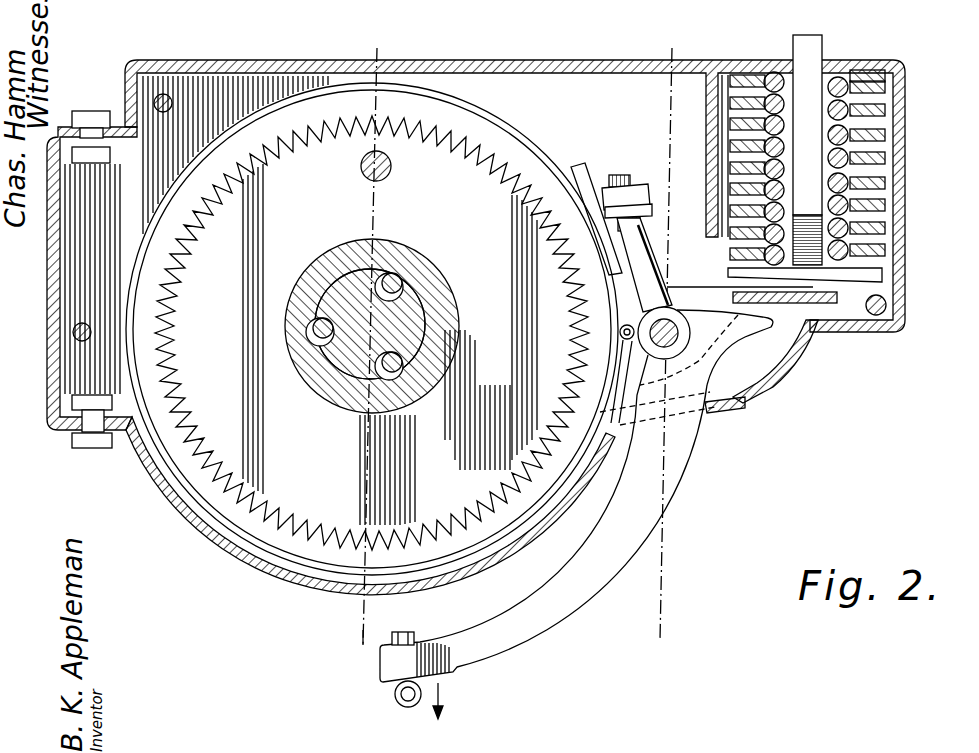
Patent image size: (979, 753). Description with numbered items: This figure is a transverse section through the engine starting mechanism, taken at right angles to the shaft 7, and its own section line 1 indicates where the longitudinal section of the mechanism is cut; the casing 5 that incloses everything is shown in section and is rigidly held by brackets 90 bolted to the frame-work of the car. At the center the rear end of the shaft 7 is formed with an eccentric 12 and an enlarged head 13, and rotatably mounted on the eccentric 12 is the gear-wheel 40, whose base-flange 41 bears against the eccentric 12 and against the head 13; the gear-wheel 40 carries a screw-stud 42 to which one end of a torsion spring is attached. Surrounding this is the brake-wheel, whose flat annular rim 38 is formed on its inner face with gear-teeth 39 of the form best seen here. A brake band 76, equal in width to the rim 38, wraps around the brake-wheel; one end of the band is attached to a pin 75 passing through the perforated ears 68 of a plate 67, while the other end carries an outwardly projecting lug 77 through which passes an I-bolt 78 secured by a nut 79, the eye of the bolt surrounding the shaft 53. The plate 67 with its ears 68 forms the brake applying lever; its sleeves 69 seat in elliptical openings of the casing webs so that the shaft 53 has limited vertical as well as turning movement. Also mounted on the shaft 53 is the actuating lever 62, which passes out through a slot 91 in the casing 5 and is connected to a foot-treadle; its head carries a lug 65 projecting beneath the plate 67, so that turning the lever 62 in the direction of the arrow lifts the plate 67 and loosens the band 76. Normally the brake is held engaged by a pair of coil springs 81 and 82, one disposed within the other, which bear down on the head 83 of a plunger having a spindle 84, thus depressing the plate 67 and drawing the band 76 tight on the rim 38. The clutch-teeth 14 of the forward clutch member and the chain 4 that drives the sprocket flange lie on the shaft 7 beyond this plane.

The section line 1 is at (360, 649).
The chain 4 is at (680, 46).
The casing 5 is at (258, 562).
The shaft 7 is at (312, 400).
The eccentric 12 is at (330, 286).
The enlarged head 13 is at (400, 292).
The clutch-teeth 14 is at (396, 278).
The rim 38 is at (283, 122).
The gear-teeth 39 is at (502, 168).
The gear-wheel 40 is at (405, 288).
The base-flange 41 is at (408, 298).
The screw-stud 42 is at (383, 179).
The shaft 53 is at (705, 343).
The actuating lever 62 is at (560, 616).
The lug 65 is at (774, 333).
The plate 67 is at (871, 330).
The ears 68 is at (676, 287).
The sleeves 69 is at (669, 356).
The pin 75 is at (620, 335).
The brake band 76 is at (468, 110).
The lug 77 is at (641, 208).
The I-bolt 78 is at (645, 255).
The nut 79 is at (622, 188).
The coil spring 81 is at (886, 100).
The coil spring 82 is at (887, 153).
The head 83 is at (882, 275).
The spindle 84 is at (820, 66).
The brackets 90 is at (50, 268).
The slot 91 is at (732, 404).